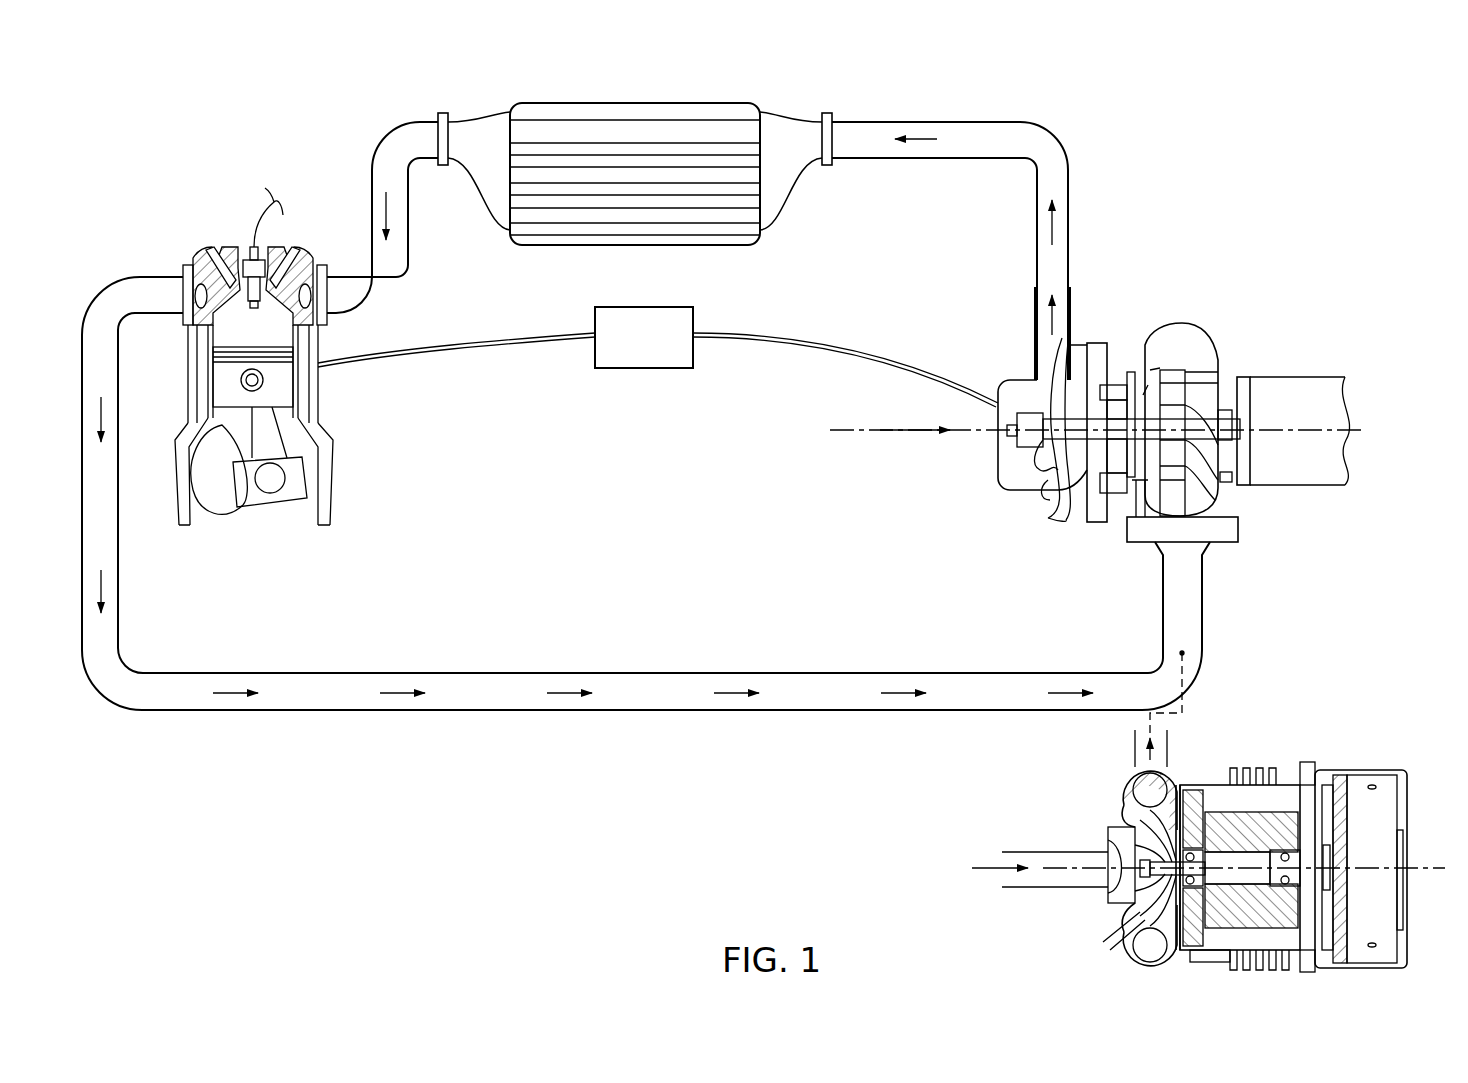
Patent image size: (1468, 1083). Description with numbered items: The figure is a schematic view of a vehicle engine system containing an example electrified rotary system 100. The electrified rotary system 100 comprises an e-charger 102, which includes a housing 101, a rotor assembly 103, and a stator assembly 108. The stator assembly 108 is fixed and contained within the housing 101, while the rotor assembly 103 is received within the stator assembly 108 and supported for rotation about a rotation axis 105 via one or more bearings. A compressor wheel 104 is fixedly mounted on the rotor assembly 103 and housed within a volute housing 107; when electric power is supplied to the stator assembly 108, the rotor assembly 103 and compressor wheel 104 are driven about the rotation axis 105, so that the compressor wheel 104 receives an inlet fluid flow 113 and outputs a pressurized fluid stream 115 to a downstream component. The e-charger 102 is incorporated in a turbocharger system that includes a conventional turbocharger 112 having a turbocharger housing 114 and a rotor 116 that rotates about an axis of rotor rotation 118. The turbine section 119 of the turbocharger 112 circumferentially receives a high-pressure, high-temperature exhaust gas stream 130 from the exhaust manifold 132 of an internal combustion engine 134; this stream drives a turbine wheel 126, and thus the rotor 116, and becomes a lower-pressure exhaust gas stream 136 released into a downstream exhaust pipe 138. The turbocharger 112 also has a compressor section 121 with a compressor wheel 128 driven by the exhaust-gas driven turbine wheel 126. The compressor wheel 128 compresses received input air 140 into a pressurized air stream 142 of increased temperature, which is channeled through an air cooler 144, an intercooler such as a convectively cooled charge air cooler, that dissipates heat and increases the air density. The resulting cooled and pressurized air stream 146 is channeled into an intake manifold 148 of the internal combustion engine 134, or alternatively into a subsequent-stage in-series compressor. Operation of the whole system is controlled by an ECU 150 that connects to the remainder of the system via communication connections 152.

The electrified rotary system 100 is at (1197, 818).
The housing 101 is at (1190, 982).
The e-charger 102 is at (1300, 765).
The rotor assembly 103 is at (1245, 882).
The compressor wheel 104 is at (1122, 897).
The rotation axis 105 is at (1057, 867).
The volute housing 107 is at (1122, 788).
The stator assembly 108 is at (1253, 805).
The turbocharger 112 is at (1092, 359).
The inlet fluid flow 113 is at (980, 867).
The turbocharger housing 114 is at (1156, 322).
The pressurized fluid stream 115 is at (1160, 752).
The rotor 116 is at (1095, 436).
The axis of rotor rotation 118 is at (853, 431).
The turbine section 119 is at (1195, 345).
The compressor section 121 is at (1045, 488).
The turbine wheel 126 is at (1170, 415).
The compressor wheel 128 is at (1038, 462).
The exhaust gas stream 130 is at (728, 691).
The exhaust manifold 132 is at (208, 267).
The internal combustion engine 134 is at (277, 395).
The lower-pressure exhaust gas stream 136 is at (1264, 408).
The exhaust pipe 138 is at (1298, 376).
The input air 140 is at (890, 428).
The pressurized air stream 142 is at (922, 138).
The air cooler 144 is at (634, 127).
The cooled and pressurized air stream 146 is at (372, 198).
The intake manifold 148 is at (272, 356).
The ECU 150 is at (640, 372).
The communication connections 152 is at (780, 350).